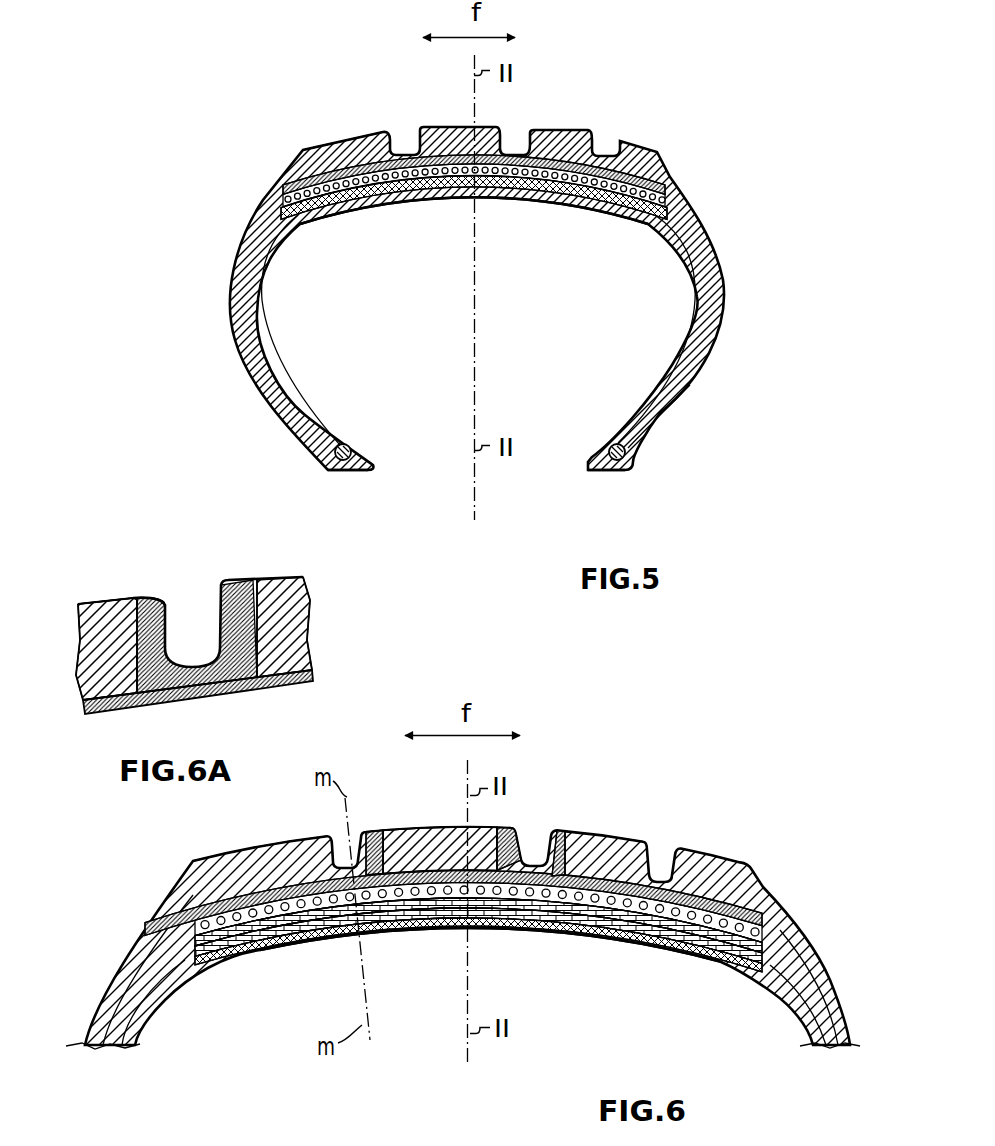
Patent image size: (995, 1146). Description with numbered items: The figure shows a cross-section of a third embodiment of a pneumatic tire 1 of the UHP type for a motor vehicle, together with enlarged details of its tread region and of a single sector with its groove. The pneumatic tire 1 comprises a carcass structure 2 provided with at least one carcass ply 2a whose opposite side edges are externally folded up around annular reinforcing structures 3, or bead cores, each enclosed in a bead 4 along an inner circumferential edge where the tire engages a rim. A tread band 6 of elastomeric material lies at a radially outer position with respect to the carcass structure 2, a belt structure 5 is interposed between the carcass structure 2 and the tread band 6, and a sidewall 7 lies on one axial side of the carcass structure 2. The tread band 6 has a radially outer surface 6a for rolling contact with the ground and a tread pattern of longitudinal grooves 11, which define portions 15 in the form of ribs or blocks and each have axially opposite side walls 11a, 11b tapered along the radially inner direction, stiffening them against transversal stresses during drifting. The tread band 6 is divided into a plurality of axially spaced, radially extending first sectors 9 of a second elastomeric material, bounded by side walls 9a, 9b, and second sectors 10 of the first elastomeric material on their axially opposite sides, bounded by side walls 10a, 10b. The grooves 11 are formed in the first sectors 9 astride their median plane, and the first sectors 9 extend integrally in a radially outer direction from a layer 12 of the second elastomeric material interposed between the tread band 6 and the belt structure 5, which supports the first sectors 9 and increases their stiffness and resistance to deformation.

In FIG. 5, the pneumatic tire 1 is at (481, 278).
In FIG. 6, the pneumatic tire 1 is at (463, 879).
In FIG. 5, the carcass structure 2 is at (481, 331).
In FIG. 6, the carcass structure 2 is at (773, 985).
In FIG. 5, the carcass ply 2a is at (672, 378).
In FIG. 5, the annular reinforcing structure 3 is at (340, 462).
In FIG. 5, the bead 4 is at (375, 468).
In FIG. 5, the belt structure 5 is at (664, 203).
In FIG. 6, the belt structure 5 is at (745, 948).
In FIG. 5, the tread band 6 is at (502, 144).
In FIG. 6, the tread band 6 is at (475, 863).
In FIG. 5, the radially outer surface 6a is at (558, 128).
In FIG. 6, the radially outer surface 6a is at (598, 825).
In FIG. 5, the sidewall 7 is at (228, 310).
In FIG. 5, the first sector 9 is at (383, 150).
In FIG. 6A, the first sector 9 is at (110, 625).
In FIG. 6, the first sector 9 is at (449, 865).
In FIG. 6, the side wall of first sector 9a is at (425, 830).
In FIG. 6, the side wall of first sector 9b is at (325, 852).
In FIG. 5, the second sector 10 is at (628, 150).
In FIG. 6A, the second sector 10 is at (300, 625).
In FIG. 6, the second sector 10 is at (496, 906).
In FIG. 6, the side wall of second sector 10a is at (641, 940).
In FIG. 6, the side wall of second sector 10b is at (566, 935).
In FIG. 5, the longitudinal groove 11 is at (405, 141).
In FIG. 6A, the longitudinal groove 11 is at (216, 581).
In FIG. 6, the longitudinal groove 11 is at (468, 802).
In FIG. 6A, the side wall of groove 11a is at (217, 603).
In FIG. 6, the side wall of groove 11a is at (368, 835).
In FIG. 6A, the side wall of groove 11b is at (170, 615).
In FIG. 6, the side wall of groove 11b is at (338, 838).
In FIG. 5, the layer 12 is at (275, 192).
In FIG. 6A, the layer 12 is at (293, 680).
In FIG. 6, the layer 12 is at (292, 950).
In FIG. 5, the portion of tread band 15 is at (318, 143).
In FIG. 6A, the portion of tread band 15 is at (116, 580).
In FIG. 6, the portion of tread band 15 is at (390, 792).